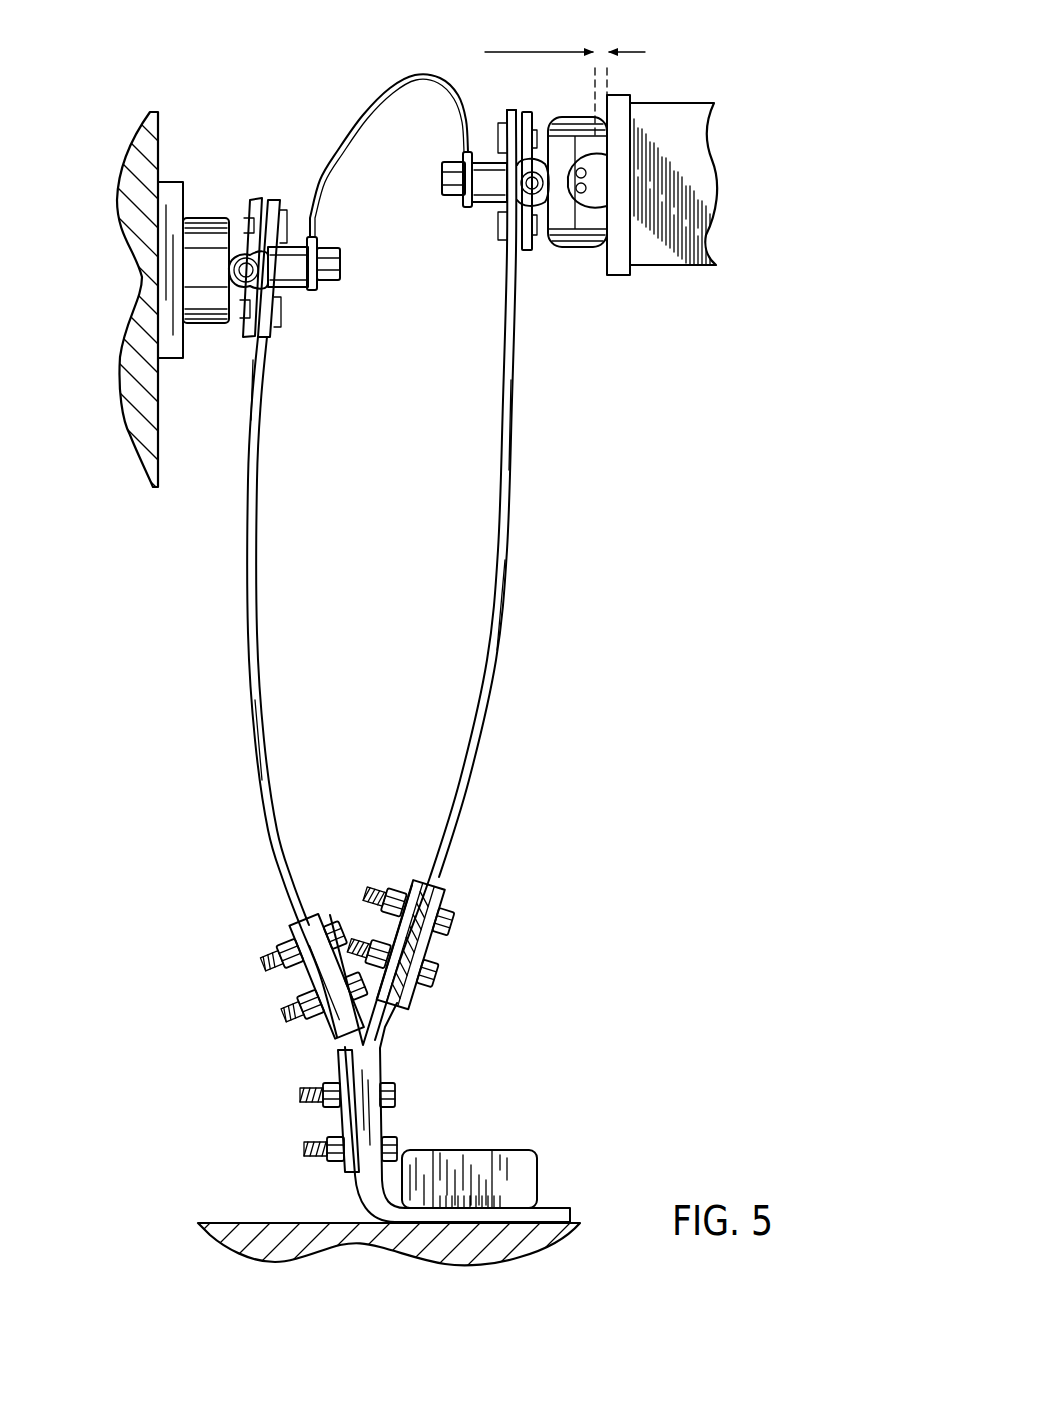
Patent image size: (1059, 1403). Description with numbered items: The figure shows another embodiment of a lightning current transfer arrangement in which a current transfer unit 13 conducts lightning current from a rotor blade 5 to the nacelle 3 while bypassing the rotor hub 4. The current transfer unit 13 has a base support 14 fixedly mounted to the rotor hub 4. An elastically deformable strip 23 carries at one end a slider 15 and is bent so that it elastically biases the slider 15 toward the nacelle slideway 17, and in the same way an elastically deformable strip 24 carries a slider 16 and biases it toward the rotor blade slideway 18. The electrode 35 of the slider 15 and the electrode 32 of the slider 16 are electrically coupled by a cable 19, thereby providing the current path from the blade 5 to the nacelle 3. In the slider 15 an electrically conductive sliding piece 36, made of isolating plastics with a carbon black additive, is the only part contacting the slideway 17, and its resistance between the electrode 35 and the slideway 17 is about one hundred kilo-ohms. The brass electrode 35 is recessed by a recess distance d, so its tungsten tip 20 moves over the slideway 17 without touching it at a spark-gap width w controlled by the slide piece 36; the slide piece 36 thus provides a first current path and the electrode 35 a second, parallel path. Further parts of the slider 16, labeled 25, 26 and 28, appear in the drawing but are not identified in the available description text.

The nacelle 3 is at (700, 188).
The rotor hub 4 is at (256, 1221).
The rotor blade 5 is at (130, 352).
The current transfer unit 13 is at (634, 526).
The base support 14 is at (378, 1057).
The slider 15 is at (604, 184).
The slider 16 is at (274, 279).
The nacelle slideway 17 is at (623, 278).
The rotor blade slideway 18 is at (172, 188).
The cable 19 is at (402, 82).
The tip of electrode 20 is at (592, 180).
The elastically deformable strip 23 is at (490, 666).
The elastically deformable strip 24 is at (250, 632).
The ball joint / eye 25 is at (533, 194).
The clamp plate 26 is at (238, 292).
The bushing 28 is at (206, 322).
The electrode 32 is at (277, 283).
The electrode 35 is at (500, 196).
The slide piece 36 is at (583, 234).